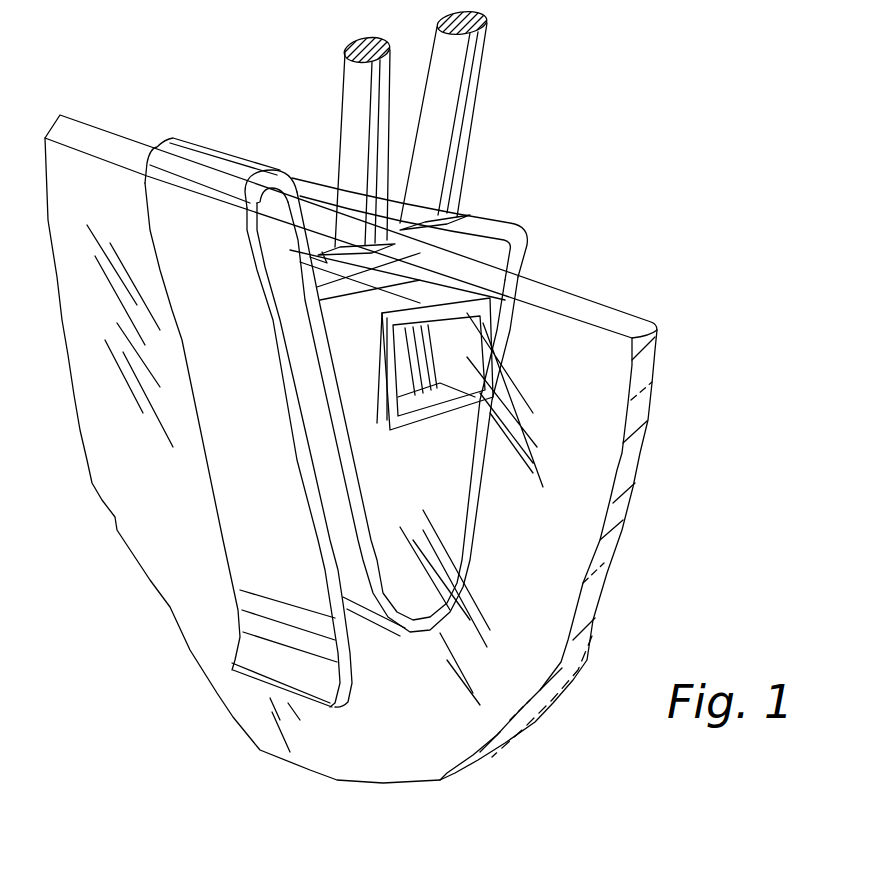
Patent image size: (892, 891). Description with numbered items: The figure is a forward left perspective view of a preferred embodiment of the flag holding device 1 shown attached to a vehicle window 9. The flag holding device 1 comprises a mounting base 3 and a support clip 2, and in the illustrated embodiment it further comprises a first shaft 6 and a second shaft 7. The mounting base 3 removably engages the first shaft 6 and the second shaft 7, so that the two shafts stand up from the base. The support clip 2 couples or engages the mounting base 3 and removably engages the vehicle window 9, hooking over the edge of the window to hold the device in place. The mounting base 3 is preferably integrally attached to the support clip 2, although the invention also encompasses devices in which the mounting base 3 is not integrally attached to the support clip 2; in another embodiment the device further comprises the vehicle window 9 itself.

The flag holding device 1 is at (523, 232).
The support clip 2 is at (232, 530).
The mounting base 3 is at (473, 533).
The first shaft 6 is at (345, 48).
The second shaft 7 is at (487, 24).
The vehicle window 9 is at (615, 318).